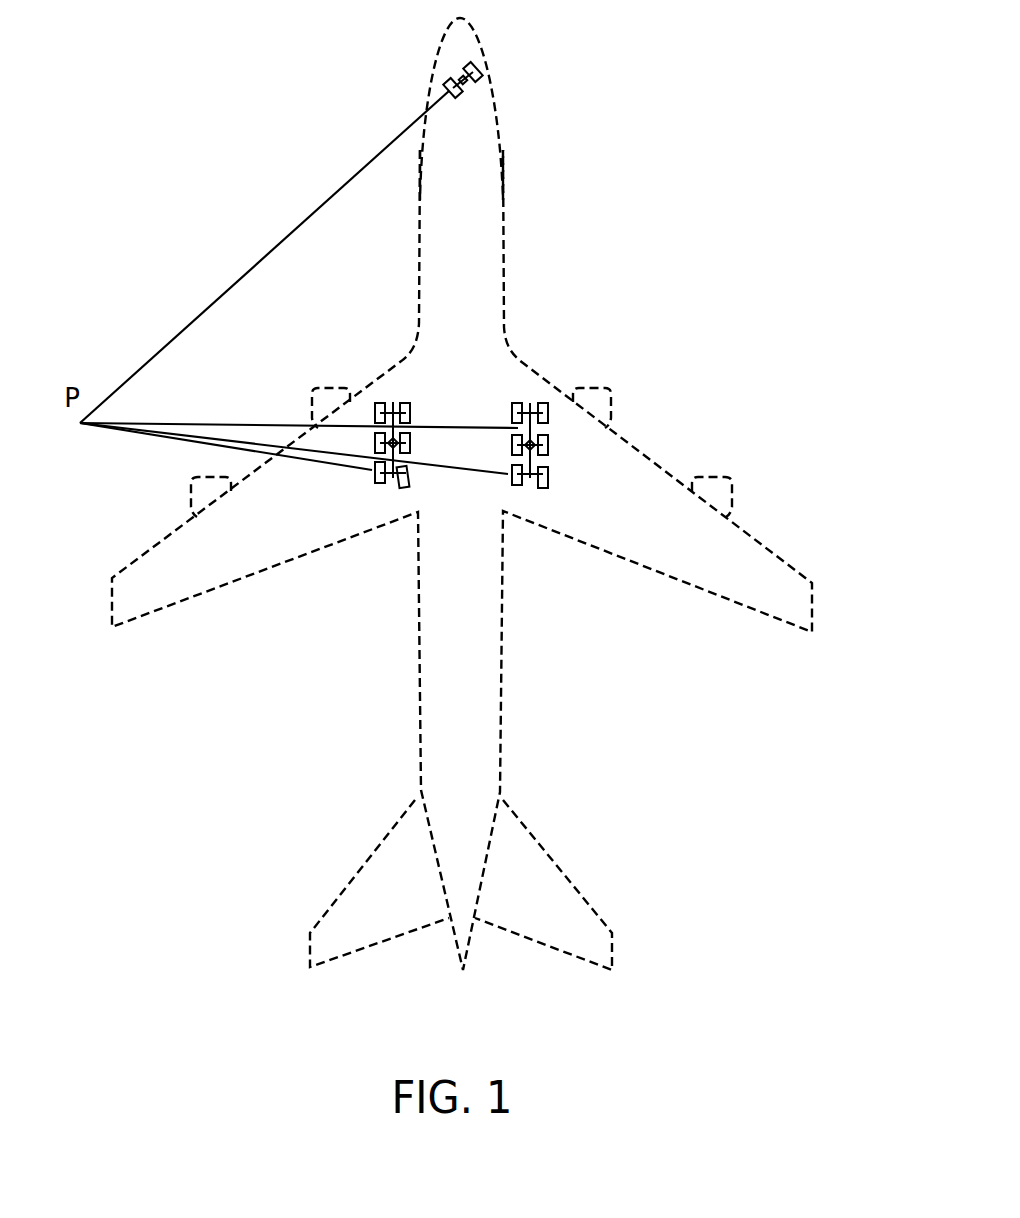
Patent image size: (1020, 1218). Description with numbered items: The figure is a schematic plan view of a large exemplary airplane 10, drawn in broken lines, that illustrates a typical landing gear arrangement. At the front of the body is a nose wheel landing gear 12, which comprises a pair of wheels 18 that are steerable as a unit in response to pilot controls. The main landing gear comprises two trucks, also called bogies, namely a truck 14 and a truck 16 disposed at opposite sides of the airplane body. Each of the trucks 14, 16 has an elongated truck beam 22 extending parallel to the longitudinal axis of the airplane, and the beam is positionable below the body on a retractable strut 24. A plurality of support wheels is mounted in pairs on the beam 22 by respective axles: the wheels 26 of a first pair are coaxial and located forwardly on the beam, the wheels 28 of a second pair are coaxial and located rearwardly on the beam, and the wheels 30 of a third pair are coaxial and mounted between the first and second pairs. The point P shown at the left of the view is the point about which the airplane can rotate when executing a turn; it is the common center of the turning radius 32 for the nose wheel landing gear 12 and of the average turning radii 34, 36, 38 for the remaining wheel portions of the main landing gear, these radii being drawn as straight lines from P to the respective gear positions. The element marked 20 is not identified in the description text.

The airplane 10 is at (504, 237).
The nose wheel landing gear 12 is at (486, 60).
The truck 14 is at (418, 396).
The truck 16 is at (532, 397).
The wheels 18 is at (459, 96).
The nose landing gear 20 is at (459, 77).
The truck beam 22 is at (410, 450).
The retractable strut 24 is at (411, 443).
The wheels of a first pair 26 is at (404, 402).
The wheels of a second pair 28 is at (402, 490).
The wheels of a third pair 30 is at (512, 446).
The turning radius 32 is at (287, 237).
The turning radius 34 is at (267, 422).
The turning radius 36 is at (318, 462).
The turning radius 38 is at (350, 460).